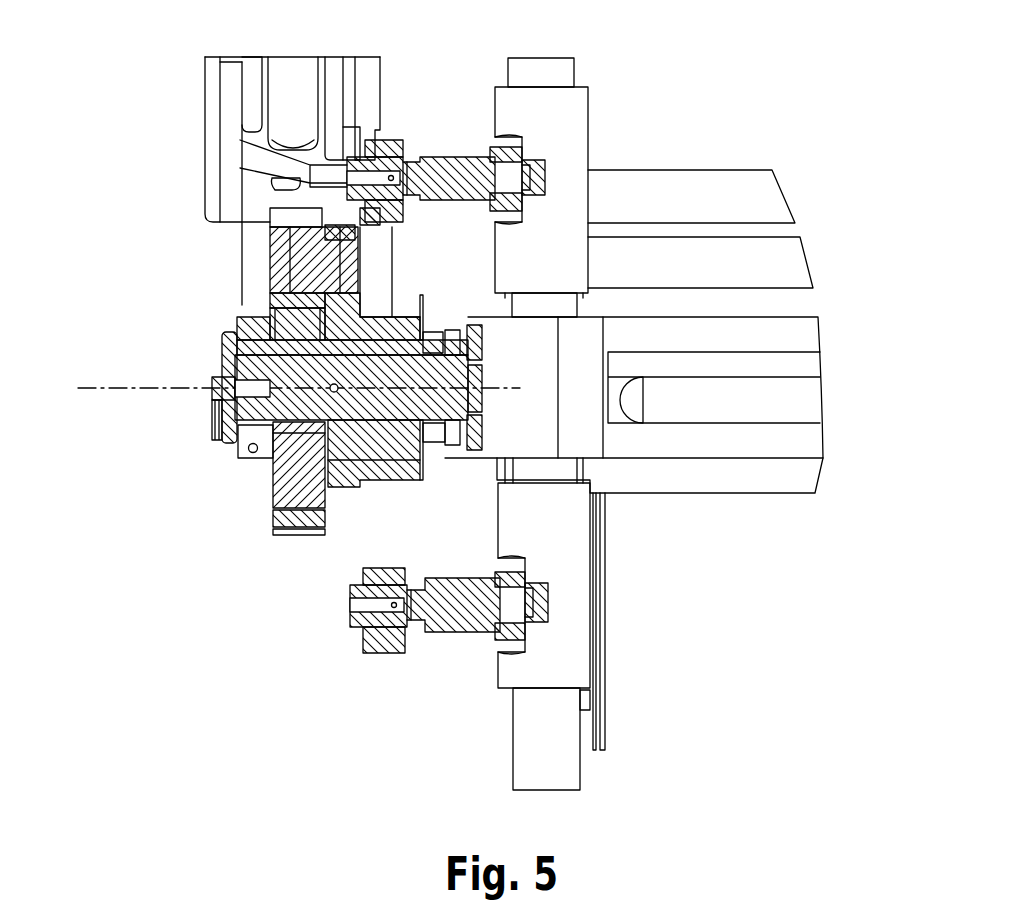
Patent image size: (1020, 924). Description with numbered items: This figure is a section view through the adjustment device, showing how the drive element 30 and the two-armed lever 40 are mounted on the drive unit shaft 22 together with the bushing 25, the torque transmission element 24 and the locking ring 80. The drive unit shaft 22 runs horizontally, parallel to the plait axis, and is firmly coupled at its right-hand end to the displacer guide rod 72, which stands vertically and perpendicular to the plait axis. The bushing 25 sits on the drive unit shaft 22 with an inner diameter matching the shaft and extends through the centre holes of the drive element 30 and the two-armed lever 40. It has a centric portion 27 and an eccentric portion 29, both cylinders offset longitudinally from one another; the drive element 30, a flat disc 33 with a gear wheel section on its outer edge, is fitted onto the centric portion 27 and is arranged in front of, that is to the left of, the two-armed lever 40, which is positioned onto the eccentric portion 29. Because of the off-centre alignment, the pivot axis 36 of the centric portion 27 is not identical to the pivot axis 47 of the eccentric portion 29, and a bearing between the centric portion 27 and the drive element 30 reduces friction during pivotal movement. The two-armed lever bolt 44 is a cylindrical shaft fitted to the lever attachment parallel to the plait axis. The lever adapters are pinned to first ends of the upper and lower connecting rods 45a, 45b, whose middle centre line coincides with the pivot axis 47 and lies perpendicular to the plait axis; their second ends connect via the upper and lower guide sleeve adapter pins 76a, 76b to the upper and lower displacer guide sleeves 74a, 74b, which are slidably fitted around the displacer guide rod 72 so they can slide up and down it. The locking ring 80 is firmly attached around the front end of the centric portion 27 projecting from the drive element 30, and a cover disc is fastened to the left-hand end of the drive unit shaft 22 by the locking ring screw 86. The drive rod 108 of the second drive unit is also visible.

The drive rod 108 is at (228, 95).
The upper connecting rod 45a is at (388, 140).
The upper displacer guide sleeve adapter pin 76a is at (433, 162).
The upper displacer guide sleeve 74a is at (572, 120).
The torque transmission element 24 is at (280, 232).
The two-armed lever bolt 44 is at (280, 258).
The locking ring 80 is at (225, 323).
The pivot axis of centric portion 36 is at (95, 388).
The disc 33 is at (228, 363).
The locking ring screw 86 is at (212, 395).
The centric portion of the bushing 27 is at (215, 440).
The bushing 25 is at (212, 478).
The drive element 30 is at (298, 495).
The two-armed lever 40 is at (352, 487).
The pivot axis of eccentric portion 47 is at (370, 410).
The eccentric portion of the bushing 29 is at (405, 470).
The drive unit shaft 22 is at (440, 445).
The lower displacer guide sleeve 74b is at (580, 547).
The lower displacer guide sleeve adapter pin 76b is at (450, 620).
The lower connecting rod 45b is at (380, 652).
The displacer guide rod 72 is at (567, 775).